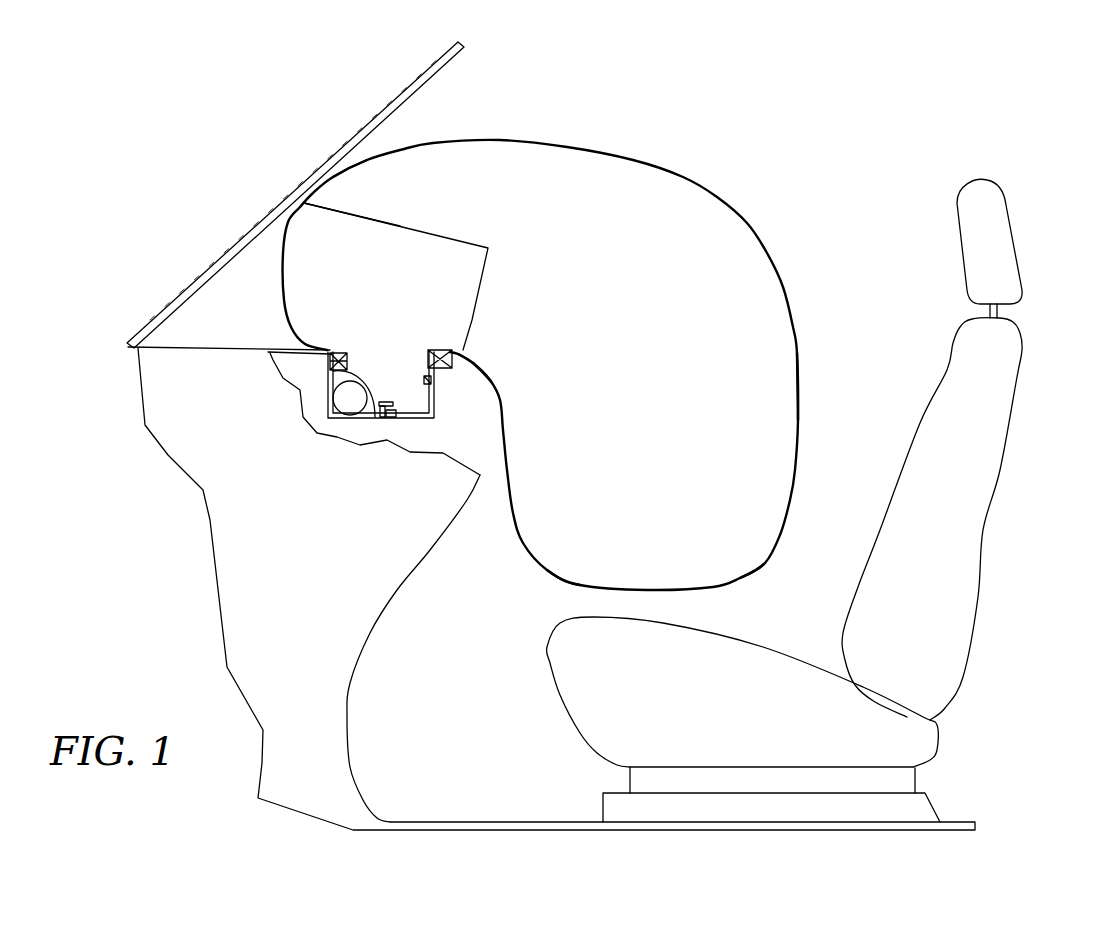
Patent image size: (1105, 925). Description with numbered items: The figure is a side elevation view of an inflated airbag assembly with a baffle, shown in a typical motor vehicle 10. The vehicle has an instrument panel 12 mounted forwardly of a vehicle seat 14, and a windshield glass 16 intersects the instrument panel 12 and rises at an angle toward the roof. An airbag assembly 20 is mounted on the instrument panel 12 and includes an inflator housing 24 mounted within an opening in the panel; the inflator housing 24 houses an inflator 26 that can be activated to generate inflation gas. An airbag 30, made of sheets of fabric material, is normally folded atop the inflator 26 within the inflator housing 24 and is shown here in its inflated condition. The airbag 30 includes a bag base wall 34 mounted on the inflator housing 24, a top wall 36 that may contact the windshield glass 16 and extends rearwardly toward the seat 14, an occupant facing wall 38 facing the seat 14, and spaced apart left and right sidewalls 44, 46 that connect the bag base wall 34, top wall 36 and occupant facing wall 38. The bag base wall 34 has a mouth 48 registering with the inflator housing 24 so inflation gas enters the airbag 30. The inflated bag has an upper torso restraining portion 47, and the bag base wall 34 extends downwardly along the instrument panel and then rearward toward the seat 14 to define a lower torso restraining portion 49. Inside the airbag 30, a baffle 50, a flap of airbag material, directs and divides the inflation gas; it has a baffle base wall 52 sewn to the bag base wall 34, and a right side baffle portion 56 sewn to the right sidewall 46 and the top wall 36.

The motor vehicle 10 is at (243, 180).
The instrument panel 12 is at (208, 348).
The vehicle seat 14 is at (970, 510).
The windshield glass 16 is at (309, 173).
The airbag assembly 20 is at (709, 171).
The inflator housing 24 is at (413, 417).
The inflator 26 is at (348, 405).
The airbag 30 is at (553, 134).
The bag base wall 34 is at (447, 345).
The top wall 36 is at (353, 167).
The occupant facing wall 38 is at (800, 395).
The left sidewall 44 is at (597, 230).
The right sidewall 46 is at (570, 517).
The upper torso restraining portion 47 is at (663, 233).
The mouth 48 is at (347, 352).
The lower torso restraining portion 49 is at (735, 532).
The baffle 50 is at (447, 233).
The baffle base wall 52 is at (460, 350).
The right side baffle portion 56 is at (400, 267).